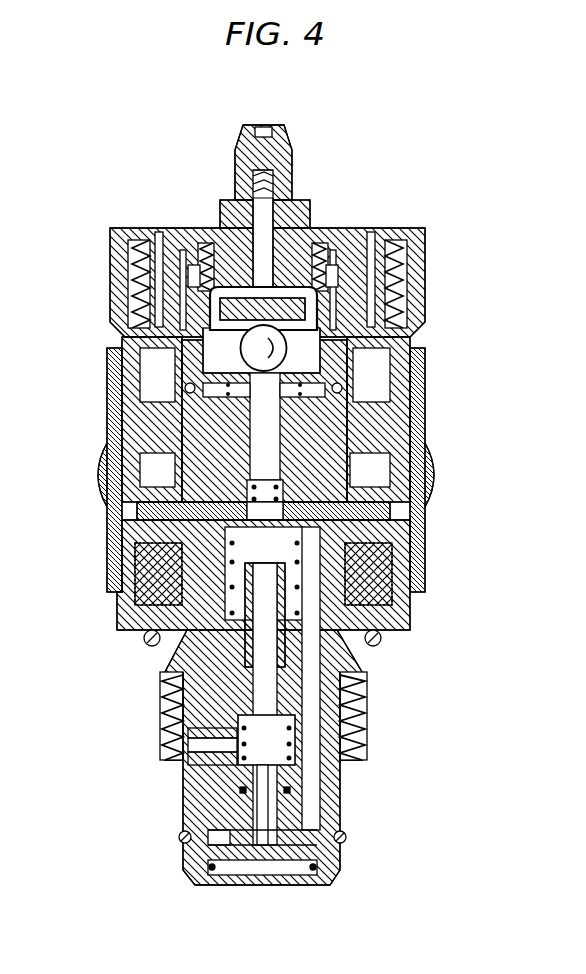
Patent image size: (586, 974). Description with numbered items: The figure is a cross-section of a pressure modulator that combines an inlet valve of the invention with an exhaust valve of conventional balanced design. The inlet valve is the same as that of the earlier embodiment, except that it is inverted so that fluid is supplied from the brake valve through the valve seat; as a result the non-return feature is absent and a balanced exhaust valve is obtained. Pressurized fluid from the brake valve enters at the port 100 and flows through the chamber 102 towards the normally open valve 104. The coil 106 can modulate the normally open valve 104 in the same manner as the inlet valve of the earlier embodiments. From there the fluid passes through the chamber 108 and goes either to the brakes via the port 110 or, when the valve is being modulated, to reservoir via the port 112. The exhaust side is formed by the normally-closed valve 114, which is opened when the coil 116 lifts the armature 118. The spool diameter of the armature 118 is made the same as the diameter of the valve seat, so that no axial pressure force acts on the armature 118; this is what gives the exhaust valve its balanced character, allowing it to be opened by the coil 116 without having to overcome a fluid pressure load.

The port 100 is at (267, 740).
The chamber 102 is at (240, 760).
The normally open valve 104 is at (240, 512).
The coil 106 is at (158, 577).
The chamber 108 is at (228, 472).
The port 110 is at (310, 808).
The port 112 is at (290, 162).
The normally-closed valve 114 is at (287, 340).
The coil 116 is at (413, 375).
The armature 118 is at (282, 420).